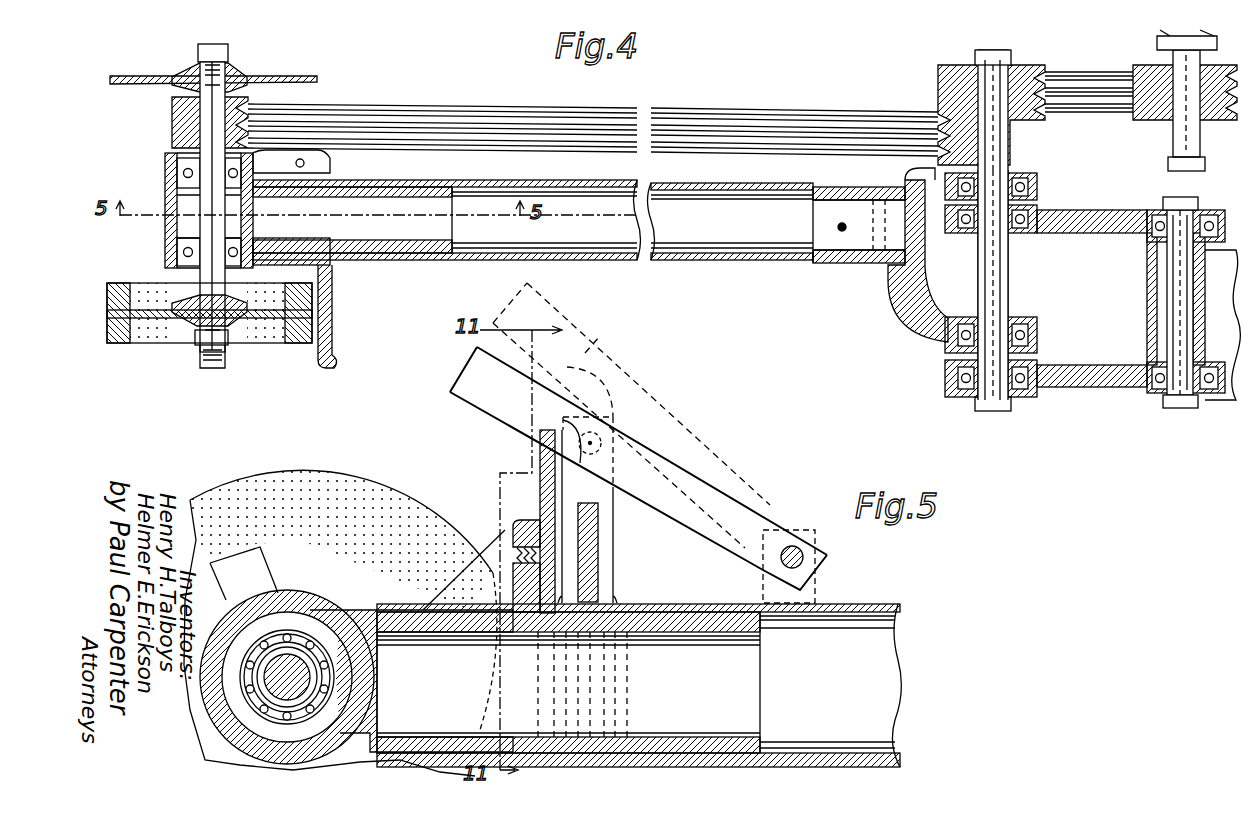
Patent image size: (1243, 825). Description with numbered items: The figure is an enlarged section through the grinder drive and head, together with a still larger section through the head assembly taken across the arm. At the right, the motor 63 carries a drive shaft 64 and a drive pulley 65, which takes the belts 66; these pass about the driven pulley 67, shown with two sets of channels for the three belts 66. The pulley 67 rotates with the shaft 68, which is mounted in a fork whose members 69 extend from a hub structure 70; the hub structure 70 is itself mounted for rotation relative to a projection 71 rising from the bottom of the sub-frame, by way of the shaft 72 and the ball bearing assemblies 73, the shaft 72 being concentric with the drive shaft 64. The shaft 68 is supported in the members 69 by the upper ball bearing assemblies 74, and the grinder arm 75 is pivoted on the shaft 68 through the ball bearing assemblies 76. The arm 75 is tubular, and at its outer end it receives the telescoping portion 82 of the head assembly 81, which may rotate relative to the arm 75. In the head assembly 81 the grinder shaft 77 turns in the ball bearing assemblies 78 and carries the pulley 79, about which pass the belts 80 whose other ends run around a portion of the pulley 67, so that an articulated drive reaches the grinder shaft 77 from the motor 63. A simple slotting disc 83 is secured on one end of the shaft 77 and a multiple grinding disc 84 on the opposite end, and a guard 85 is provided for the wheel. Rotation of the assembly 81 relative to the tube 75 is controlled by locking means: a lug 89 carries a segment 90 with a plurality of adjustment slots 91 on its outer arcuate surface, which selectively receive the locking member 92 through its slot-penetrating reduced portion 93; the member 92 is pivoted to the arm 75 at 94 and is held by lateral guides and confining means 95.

In FIG. 4, the motor 63 is at (1185, 36).
In FIG. 4, the drive shaft 64 is at (1175, 141).
In FIG. 4, the drive pulley 65 is at (1215, 120).
In FIG. 4, the belts 66 is at (1092, 100).
In FIG. 4, the driven pulley 67 is at (968, 65).
In FIG. 4, the shaft 68 is at (1008, 276).
In FIG. 4, the fork members 69 is at (1100, 240).
In FIG. 4, the hub structure 70 is at (1215, 212).
In FIG. 4, the projection 71 is at (1222, 340).
In FIG. 4, the shaft 72 is at (1180, 284).
In FIG. 4, the ball bearing assemblies 73 is at (1162, 212).
In FIG. 4, the upper ball bearing assemblies 74 is at (965, 235).
In FIG. 4, the grinder arm 75 is at (489, 258).
In FIG. 5, the grinder arm 75 is at (892, 606).
In FIG. 4, the ball bearing assemblies 76 is at (1037, 190).
In FIG. 4, the grinder shaft 77 is at (200, 198).
In FIG. 5, the grinder shaft 77 is at (307, 675).
In FIG. 4, the ball bearing assemblies 78 is at (182, 172).
In FIG. 5, the ball bearing assemblies 78 is at (327, 700).
In FIG. 4, the pulley 79 is at (172, 130).
In FIG. 4, the belts 80 is at (453, 125).
In FIG. 4, the head assembly 81 is at (335, 256).
In FIG. 5, the head assembly 81 is at (345, 610).
In FIG. 4, the telescoping portion 82 is at (432, 252).
In FIG. 5, the telescoping portion 82 is at (675, 612).
In FIG. 4, the slotting disc 83 is at (270, 77).
In FIG. 5, the slotting disc 83 is at (290, 480).
In FIG. 4, the multiple grinding disc 84 is at (140, 343).
In FIG. 4, the guard 85 is at (334, 323).
In FIG. 5, the lug 89 is at (513, 529).
In FIG. 5, the segment 90 is at (540, 498).
In FIG. 5, the adjustment slots 91 is at (535, 453).
In FIG. 5, the locking member 92 is at (646, 450).
In FIG. 5, the reduced portion 93 is at (470, 395).
In FIG. 5, the pivot 94 is at (795, 547).
In FIG. 5, the lateral guides 95 is at (598, 536).